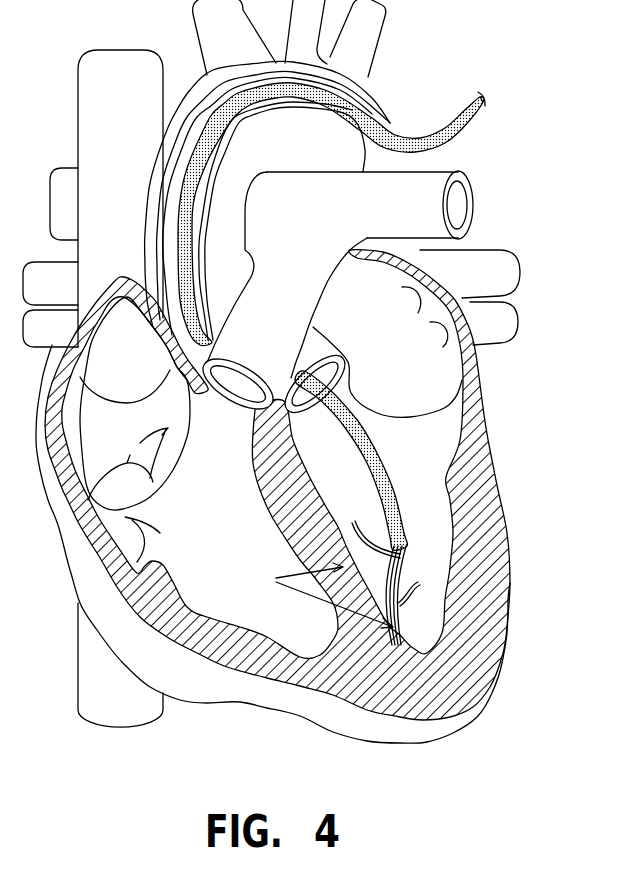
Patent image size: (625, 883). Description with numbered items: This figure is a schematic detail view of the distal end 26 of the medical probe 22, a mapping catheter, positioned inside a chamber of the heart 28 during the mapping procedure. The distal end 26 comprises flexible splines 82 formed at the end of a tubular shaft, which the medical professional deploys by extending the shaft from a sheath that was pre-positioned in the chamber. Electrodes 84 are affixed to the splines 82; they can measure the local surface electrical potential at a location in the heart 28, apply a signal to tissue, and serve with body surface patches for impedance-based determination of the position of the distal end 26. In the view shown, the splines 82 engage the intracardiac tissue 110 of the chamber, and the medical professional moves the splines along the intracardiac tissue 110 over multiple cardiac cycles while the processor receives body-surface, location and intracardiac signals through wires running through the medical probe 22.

The medical probe 22 is at (462, 122).
The distal end 26 is at (432, 538).
The heart 28 is at (98, 108).
The flexible splines 82 is at (395, 571).
The electrodes 84 is at (320, 595).
The intracardiac tissue 110 is at (458, 443).